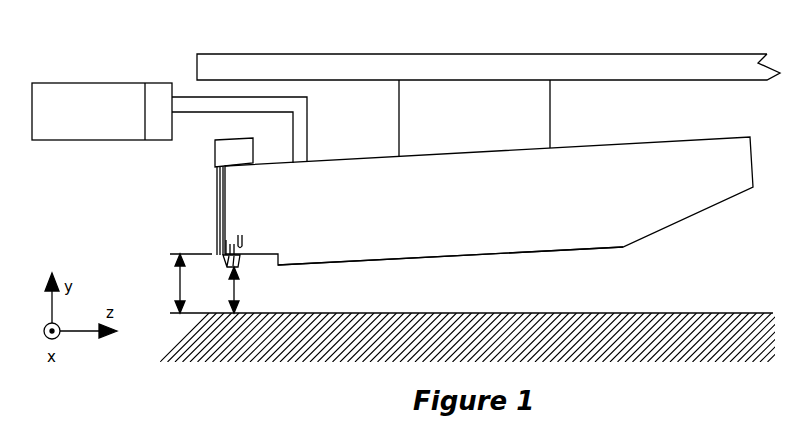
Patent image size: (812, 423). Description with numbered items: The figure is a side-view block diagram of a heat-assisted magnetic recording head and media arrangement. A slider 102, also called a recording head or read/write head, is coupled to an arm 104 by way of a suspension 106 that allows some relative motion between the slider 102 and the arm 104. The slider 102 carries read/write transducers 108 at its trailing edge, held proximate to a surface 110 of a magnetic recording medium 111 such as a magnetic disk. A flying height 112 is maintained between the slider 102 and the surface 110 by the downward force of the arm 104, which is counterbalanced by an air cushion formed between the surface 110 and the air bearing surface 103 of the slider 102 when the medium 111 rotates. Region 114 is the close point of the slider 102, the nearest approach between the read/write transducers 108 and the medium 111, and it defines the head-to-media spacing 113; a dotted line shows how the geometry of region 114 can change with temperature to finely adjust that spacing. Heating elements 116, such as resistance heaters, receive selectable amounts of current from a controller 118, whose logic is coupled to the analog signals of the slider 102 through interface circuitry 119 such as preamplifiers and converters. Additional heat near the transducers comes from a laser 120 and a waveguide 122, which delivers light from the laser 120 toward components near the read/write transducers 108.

The slider 102 is at (662, 143).
The air bearing surface 103 is at (362, 263).
The arm 104 is at (705, 62).
The suspension 106 is at (550, 112).
The read/write transducers 108 is at (232, 244).
The surface of magnetic recording medium 110 is at (663, 313).
The magnetic recording medium 111 is at (673, 350).
The flying height 112 is at (177, 283).
The head-to-media spacing 113 is at (218, 290).
The region 114 is at (238, 258).
The heating elements 116 is at (240, 237).
The controller 118 is at (85, 83).
The interface circuitry 119 is at (155, 83).
The laser 120 is at (232, 148).
The waveguide 122 is at (218, 192).